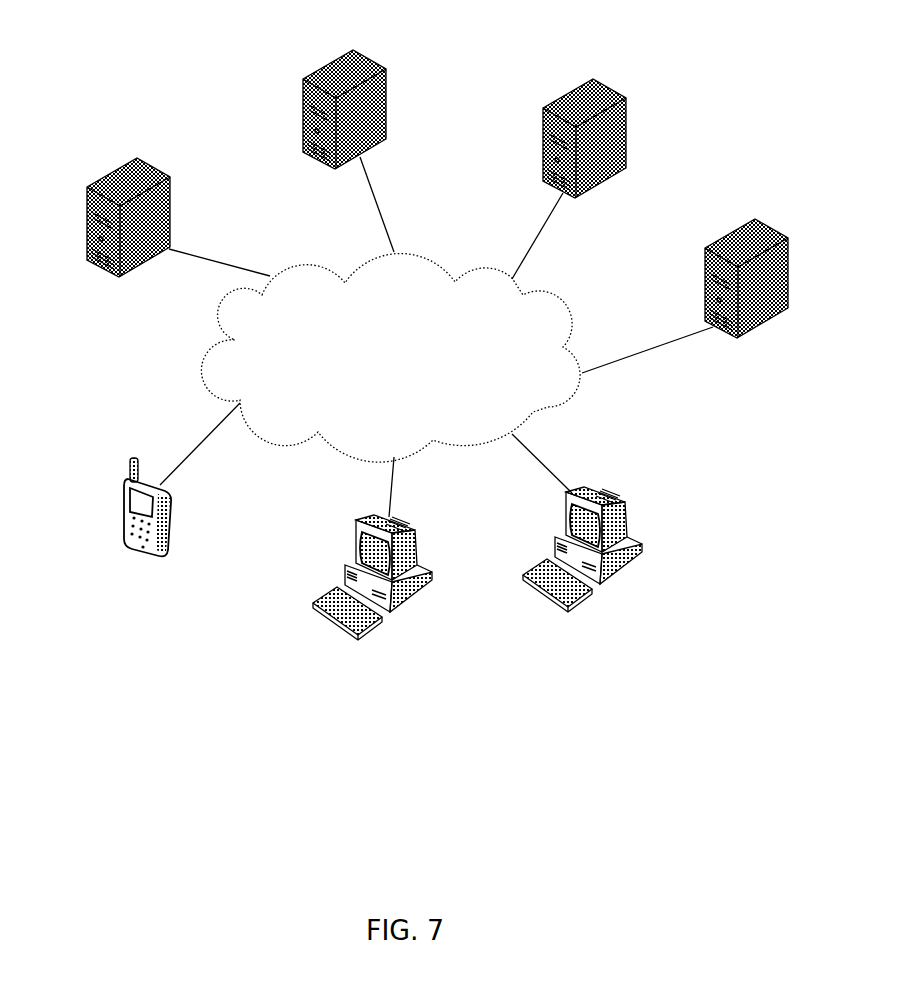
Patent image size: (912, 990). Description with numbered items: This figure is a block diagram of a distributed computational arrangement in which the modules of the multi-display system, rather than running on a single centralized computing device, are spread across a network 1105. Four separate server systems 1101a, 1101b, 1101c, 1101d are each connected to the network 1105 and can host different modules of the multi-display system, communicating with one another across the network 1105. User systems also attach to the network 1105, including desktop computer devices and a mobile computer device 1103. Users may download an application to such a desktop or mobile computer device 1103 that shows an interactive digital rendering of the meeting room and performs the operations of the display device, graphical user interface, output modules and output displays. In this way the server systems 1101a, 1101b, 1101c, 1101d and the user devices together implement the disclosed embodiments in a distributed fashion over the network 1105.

The server system 1101a is at (107, 173).
The server system 1101b is at (325, 67).
The server system 1101c is at (613, 89).
The server system 1101d is at (775, 227).
The mobile computer device 1103 is at (138, 553).
The network 1105 is at (205, 357).